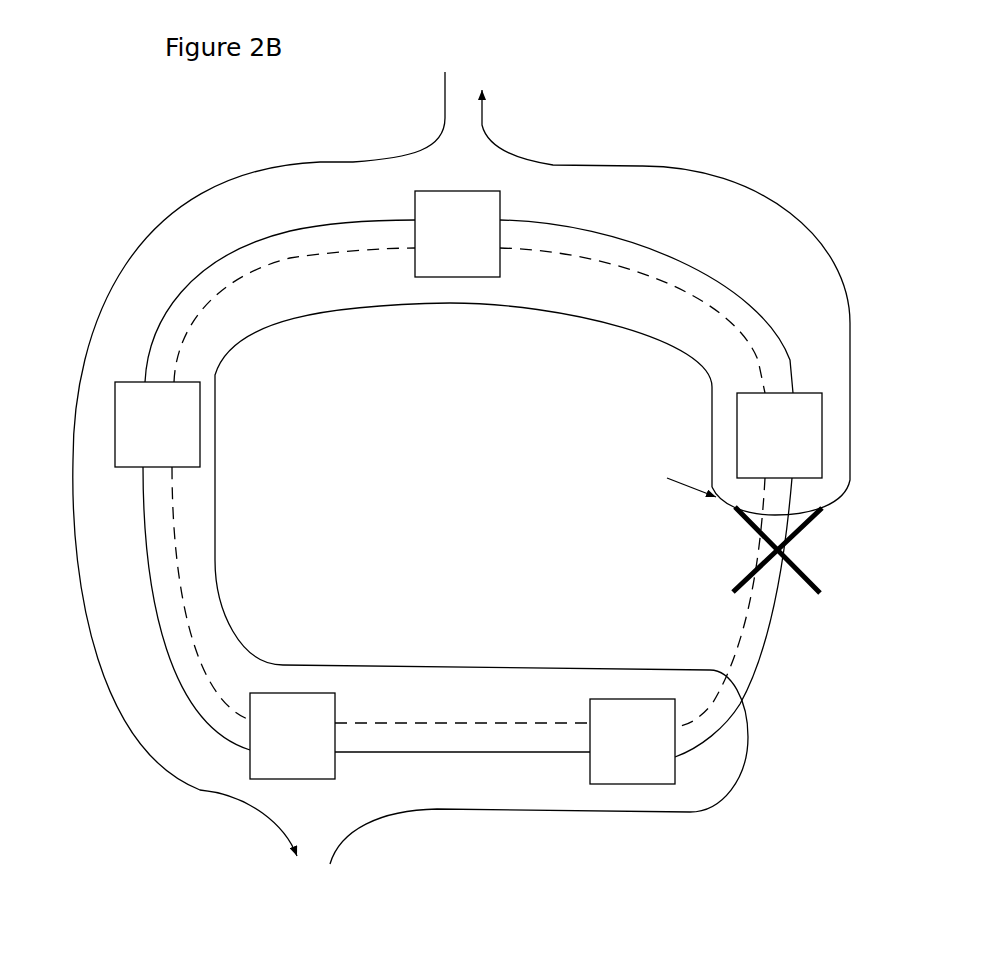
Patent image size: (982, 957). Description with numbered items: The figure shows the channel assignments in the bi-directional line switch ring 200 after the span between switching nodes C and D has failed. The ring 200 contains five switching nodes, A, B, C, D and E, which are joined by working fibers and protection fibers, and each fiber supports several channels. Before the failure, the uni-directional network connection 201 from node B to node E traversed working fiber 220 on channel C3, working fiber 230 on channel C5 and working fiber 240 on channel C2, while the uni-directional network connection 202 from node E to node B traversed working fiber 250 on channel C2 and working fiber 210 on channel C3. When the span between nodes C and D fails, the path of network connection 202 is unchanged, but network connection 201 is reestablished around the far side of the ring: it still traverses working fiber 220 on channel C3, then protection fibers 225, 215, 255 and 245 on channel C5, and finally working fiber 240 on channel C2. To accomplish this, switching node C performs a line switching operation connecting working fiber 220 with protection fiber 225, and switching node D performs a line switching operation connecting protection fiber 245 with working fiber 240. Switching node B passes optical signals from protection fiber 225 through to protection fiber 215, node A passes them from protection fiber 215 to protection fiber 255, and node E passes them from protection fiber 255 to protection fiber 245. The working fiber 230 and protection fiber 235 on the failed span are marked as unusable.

The bi-directional line switch ring 200 is at (772, 156).
The network connection 201 is at (842, 267).
The network connection 202 is at (115, 267).
The working fiber 210 is at (130, 593).
The protection fiber 215 is at (196, 572).
The working fiber 220 is at (499, 772).
The protection fiber 225 is at (507, 712).
The working fiber 230 is at (796, 609).
The protection fiber 235 is at (730, 617).
The working fiber 240 is at (698, 248).
The protection fiber 245 is at (680, 313).
The working fiber 250 is at (257, 240).
The protection fiber 255 is at (258, 305).
The channel c2 C2 is at (246, 155).
The channel c3 C3 is at (73, 646).
The channel c5 C5 is at (354, 341).